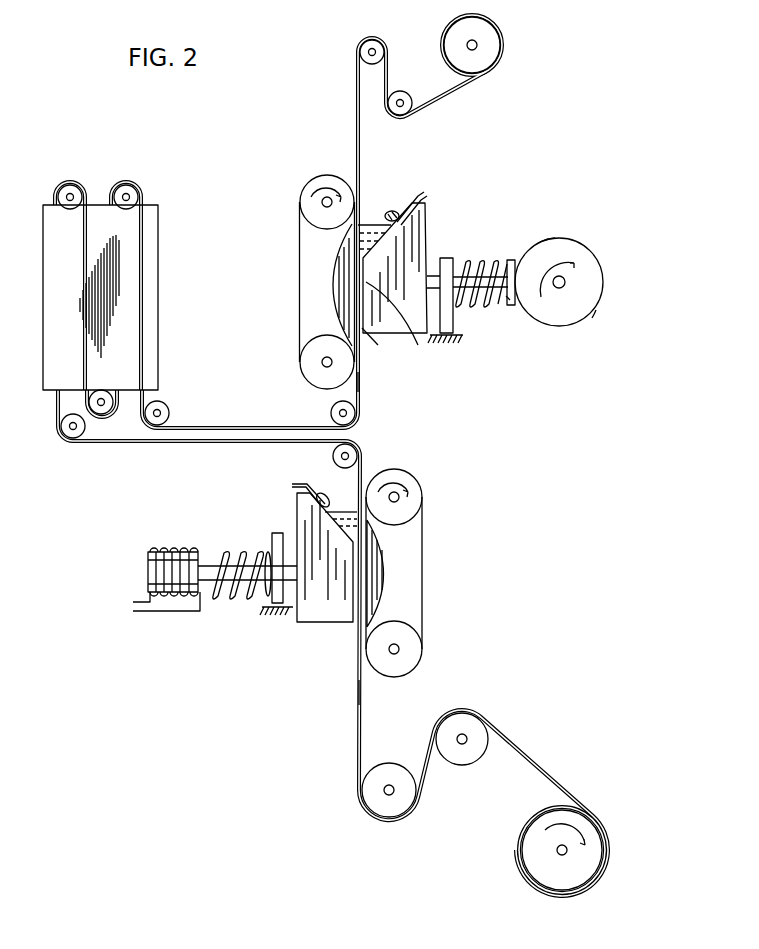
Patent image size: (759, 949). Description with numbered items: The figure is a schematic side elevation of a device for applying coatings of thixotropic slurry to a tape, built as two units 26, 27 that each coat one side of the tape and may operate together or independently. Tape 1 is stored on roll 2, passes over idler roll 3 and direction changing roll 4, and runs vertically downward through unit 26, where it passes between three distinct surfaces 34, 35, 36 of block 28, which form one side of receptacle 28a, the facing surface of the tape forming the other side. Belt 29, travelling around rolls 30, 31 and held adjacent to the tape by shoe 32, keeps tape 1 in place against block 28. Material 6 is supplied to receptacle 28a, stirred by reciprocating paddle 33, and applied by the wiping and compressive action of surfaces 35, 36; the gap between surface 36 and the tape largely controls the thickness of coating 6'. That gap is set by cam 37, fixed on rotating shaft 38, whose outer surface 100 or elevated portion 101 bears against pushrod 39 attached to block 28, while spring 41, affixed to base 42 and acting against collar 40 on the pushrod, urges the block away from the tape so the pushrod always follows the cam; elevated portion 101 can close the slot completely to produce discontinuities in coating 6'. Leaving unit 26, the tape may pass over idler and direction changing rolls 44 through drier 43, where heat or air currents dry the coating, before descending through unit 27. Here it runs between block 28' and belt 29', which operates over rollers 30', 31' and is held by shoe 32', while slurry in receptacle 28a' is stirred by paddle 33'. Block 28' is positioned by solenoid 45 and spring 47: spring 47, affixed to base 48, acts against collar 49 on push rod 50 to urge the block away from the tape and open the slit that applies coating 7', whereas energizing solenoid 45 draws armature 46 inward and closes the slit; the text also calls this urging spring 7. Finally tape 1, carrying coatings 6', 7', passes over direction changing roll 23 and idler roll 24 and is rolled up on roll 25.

The tape 1 is at (468, 78).
The roll 2 is at (486, 40).
The idler roll 3 is at (403, 90).
The direction changing roll 4 is at (363, 46).
The material 6 is at (374, 216).
The coating 6' is at (374, 389).
The spring 7 is at (341, 500).
The coating 7' is at (337, 702).
The direction changing roll 23 is at (376, 803).
The idler roll 24 is at (470, 752).
The roll 25 is at (524, 848).
The unit 26 is at (634, 270).
The unit 27 is at (475, 569).
The block 28 is at (422, 268).
The block 28' is at (319, 583).
The receptacle 28a is at (473, 165).
The receptacle 28a' is at (293, 466).
The belt 29 is at (304, 282).
The belt 29' is at (417, 573).
The roll 30 is at (306, 196).
The roller 30' is at (416, 492).
The roll 31 is at (304, 362).
The roller 31' is at (416, 649).
The shoe 32 is at (325, 285).
The shoe 32' is at (394, 573).
The reciprocating paddle 33 is at (396, 192).
The paddle 33' is at (282, 492).
The surface 34 is at (414, 196).
The surface 35 is at (401, 325).
The surface 36 is at (378, 348).
The cam 37 is at (587, 258).
The rotating shaft 38 is at (560, 290).
The pushrod 39 is at (471, 266).
The collar 40 is at (511, 259).
The spring 41 is at (498, 300).
The base 42 is at (456, 318).
The drier 43 is at (150, 323).
The idler and direction changing rolls 44 is at (72, 192).
The solenoid 45 is at (160, 552).
The iron core 46 is at (183, 600).
The spring 47 is at (249, 590).
The base 48 is at (272, 606).
The collar 49 is at (220, 553).
The push rod 50 is at (265, 551).
The surface 100 is at (598, 304).
The elevated portion 101 is at (553, 237).